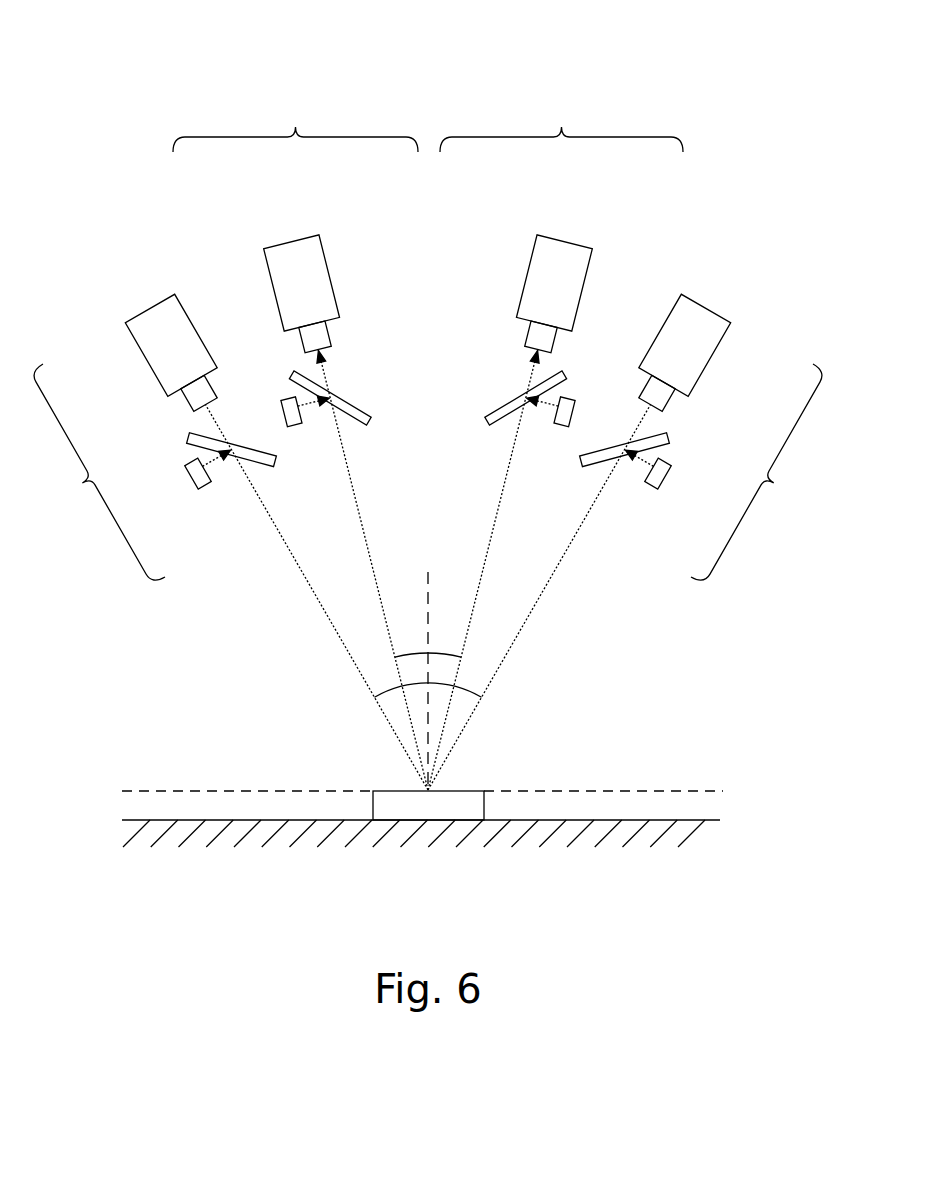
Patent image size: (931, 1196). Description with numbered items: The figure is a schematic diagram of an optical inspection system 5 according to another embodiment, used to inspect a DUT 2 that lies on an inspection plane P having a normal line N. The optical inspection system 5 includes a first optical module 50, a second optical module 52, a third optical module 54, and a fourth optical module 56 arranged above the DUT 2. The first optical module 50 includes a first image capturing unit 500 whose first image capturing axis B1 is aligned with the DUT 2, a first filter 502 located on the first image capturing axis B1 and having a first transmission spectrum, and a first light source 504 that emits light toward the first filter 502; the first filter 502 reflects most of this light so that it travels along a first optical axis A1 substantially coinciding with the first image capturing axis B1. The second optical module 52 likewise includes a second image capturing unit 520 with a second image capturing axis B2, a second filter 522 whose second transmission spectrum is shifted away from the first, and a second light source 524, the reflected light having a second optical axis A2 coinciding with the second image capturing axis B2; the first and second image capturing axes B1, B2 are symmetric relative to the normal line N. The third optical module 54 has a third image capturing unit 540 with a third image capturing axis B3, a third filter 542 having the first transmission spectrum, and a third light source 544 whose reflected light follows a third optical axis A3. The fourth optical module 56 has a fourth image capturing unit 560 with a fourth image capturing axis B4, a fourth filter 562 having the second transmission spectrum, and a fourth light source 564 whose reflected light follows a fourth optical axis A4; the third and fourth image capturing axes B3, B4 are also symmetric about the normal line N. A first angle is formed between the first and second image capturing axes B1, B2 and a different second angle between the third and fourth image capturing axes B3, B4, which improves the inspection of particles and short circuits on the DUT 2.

The optical inspection system 5 is at (100, 39).
The DUT 2 is at (485, 807).
The inspection plane P is at (668, 790).
The normal line N is at (426, 667).
The first optical module 50 is at (295, 126).
The first image capturing unit 500 is at (297, 239).
The first filter 502 is at (369, 412).
The first light source 504 is at (289, 400).
The second optical module 52 is at (561, 126).
The second image capturing unit 520 is at (559, 239).
The second filter 522 is at (487, 412).
The second light source 524 is at (567, 400).
The third optical module 54 is at (763, 476).
The third image capturing unit 540 is at (708, 366).
The third filter 542 is at (668, 443).
The third light source 544 is at (651, 492).
The fourth optical module 56 is at (93, 476).
The fourth image capturing unit 560 is at (148, 366).
The fourth filter 562 is at (188, 443).
The fourth light source 564 is at (205, 492).
The first optical axis A1 is at (357, 510).
The second optical axis A2 is at (499, 510).
The third optical axis A3 is at (526, 620).
The fourth optical axis A4 is at (330, 620).
The first image capturing axis B1 is at (325, 377).
The second image capturing axis B2 is at (531, 377).
The third image capturing axis B3 is at (640, 421).
The fourth image capturing axis B4 is at (216, 421).